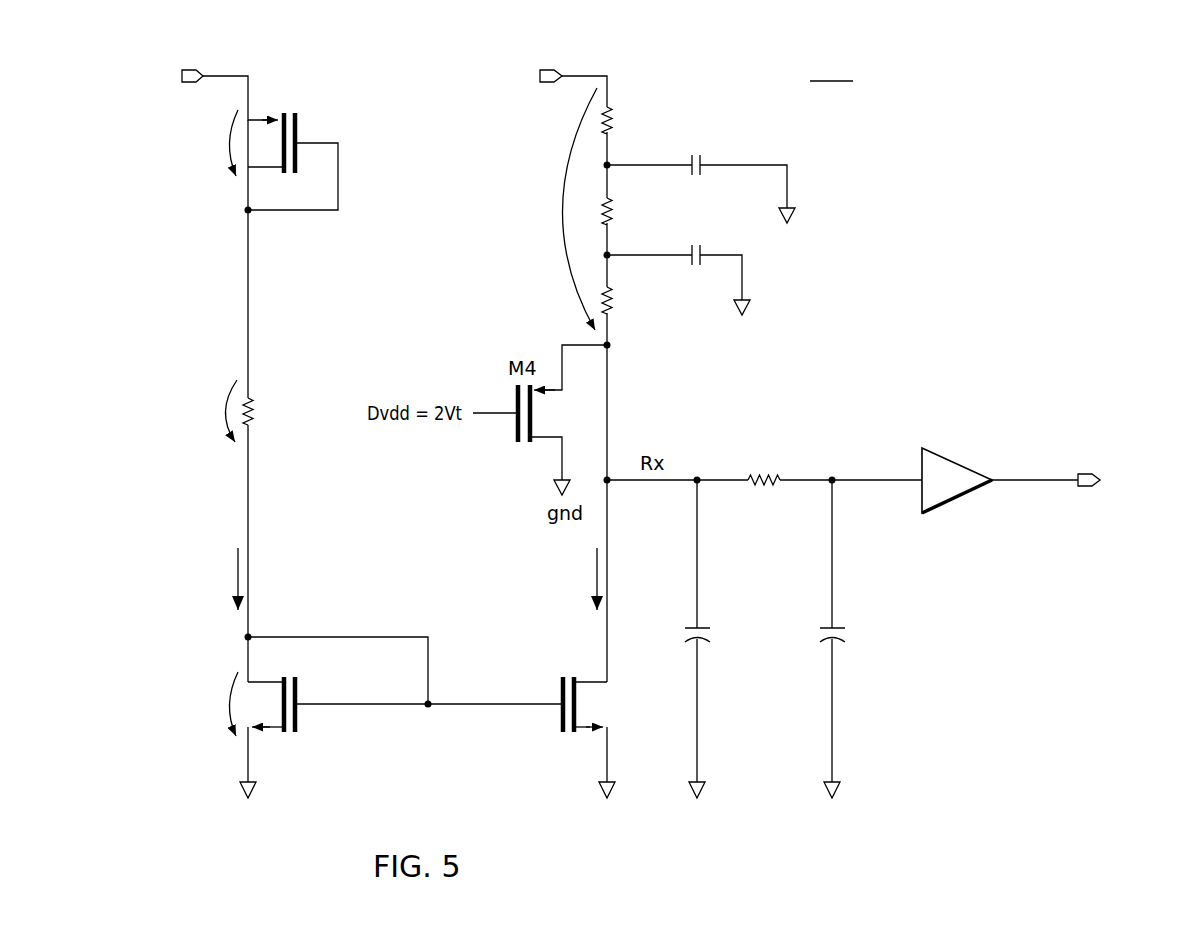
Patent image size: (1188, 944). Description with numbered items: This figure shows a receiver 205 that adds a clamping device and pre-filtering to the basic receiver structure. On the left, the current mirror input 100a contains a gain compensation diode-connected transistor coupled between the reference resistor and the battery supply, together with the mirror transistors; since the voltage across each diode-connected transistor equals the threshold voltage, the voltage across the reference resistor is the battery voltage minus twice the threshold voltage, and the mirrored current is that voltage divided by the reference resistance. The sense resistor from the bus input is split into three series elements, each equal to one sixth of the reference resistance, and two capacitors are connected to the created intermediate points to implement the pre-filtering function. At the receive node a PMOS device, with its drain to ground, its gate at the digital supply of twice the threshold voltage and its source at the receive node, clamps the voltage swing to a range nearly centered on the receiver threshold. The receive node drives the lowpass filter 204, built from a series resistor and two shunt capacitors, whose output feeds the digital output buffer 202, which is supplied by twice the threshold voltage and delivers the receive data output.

The current mirror input 100a is at (201, 811).
The receiver 205 is at (906, 88).
The lowpass filter 204 is at (870, 812).
The digital output buffer 202 is at (957, 500).